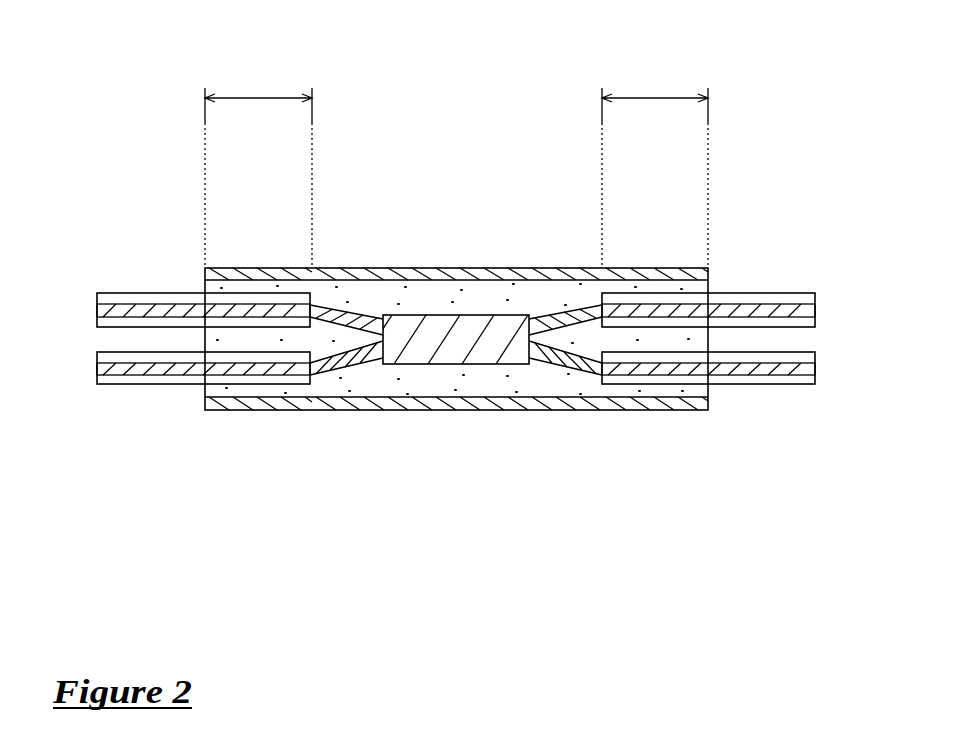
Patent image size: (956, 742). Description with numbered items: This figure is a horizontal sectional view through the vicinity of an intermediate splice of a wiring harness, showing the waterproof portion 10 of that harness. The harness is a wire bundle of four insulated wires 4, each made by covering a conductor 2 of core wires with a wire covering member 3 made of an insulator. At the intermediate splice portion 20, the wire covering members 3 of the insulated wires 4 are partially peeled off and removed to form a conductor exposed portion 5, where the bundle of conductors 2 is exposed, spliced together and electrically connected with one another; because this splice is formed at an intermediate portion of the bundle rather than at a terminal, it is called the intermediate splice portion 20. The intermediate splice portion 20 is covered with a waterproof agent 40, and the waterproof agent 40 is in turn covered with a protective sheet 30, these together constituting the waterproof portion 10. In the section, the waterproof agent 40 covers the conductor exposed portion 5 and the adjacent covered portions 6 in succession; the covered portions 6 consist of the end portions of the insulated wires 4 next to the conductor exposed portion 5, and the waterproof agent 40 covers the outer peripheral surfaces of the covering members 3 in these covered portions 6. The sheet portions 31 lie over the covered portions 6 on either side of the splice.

The waterproof portion 10 is at (456, 369).
The intermediate splice portion 20 is at (479, 386).
The protective sheet 30 is at (423, 268).
The resin portion covering lead 31 is at (262, 275).
The waterproof agent 40 is at (486, 285).
The conductor exposed portion 5 is at (343, 290).
The insulated wire 4 is at (456, 341).
The conductor 2 is at (97, 311).
The wire covering member 3 is at (110, 298).
The covered portion 6 is at (258, 98).